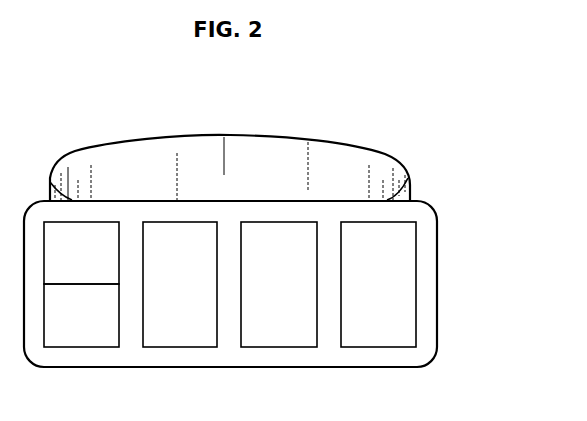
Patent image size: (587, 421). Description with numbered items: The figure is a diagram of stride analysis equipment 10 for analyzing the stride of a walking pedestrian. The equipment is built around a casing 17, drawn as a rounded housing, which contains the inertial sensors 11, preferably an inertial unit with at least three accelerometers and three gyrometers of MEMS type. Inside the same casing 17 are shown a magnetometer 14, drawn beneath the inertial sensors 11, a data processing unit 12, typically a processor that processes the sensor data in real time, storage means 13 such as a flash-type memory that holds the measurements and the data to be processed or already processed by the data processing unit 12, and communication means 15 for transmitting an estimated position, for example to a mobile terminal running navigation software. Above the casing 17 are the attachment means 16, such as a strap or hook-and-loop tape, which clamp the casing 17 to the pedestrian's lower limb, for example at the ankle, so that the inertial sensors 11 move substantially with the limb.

The stride analysis equipment 10 is at (143, 84).
The inertial sensors 11 is at (92, 262).
The data processing unit 12 is at (190, 293).
The storage means 13 is at (290, 293).
The magnetometer 14 is at (92, 324).
The communication means 15 is at (388, 293).
The attachment means 16 is at (332, 130).
The casing 17 is at (450, 282).